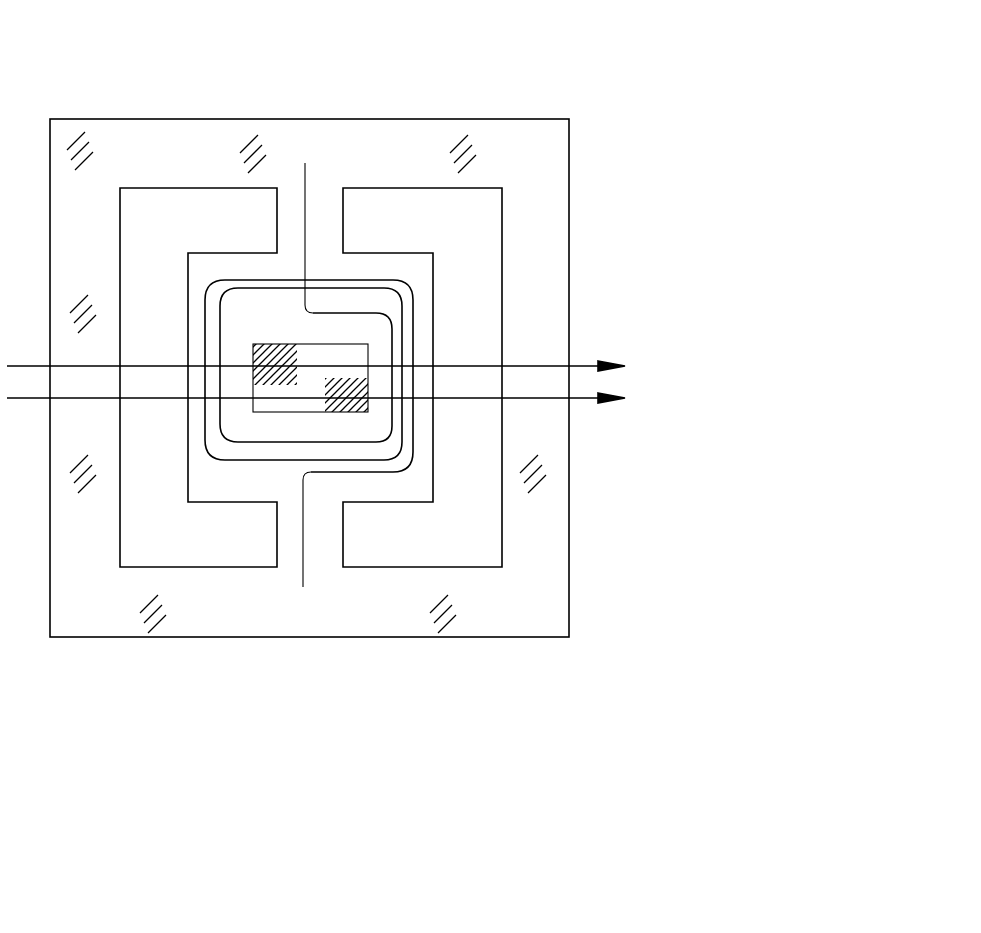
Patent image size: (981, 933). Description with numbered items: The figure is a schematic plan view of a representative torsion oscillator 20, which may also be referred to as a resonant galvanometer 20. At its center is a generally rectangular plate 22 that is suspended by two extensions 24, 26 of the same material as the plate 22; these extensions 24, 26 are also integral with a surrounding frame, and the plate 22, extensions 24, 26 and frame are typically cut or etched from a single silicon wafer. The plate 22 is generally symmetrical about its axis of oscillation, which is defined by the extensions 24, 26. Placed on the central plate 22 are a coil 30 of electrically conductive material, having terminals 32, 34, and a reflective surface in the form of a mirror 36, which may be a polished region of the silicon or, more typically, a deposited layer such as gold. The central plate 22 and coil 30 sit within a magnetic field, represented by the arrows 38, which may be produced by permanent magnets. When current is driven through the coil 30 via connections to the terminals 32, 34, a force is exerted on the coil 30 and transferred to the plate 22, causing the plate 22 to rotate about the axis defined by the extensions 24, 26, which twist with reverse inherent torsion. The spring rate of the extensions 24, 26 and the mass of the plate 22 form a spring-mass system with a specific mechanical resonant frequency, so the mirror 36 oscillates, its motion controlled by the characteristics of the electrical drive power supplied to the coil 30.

The torsion oscillator 20 is at (728, 74).
The central plate 22 is at (410, 482).
The extension 24 is at (325, 210).
The extension 26 is at (325, 550).
The coil 30 is at (410, 302).
The terminal 32 is at (300, 187).
The terminal 34 is at (301, 576).
The mirror 36 is at (297, 412).
The arrows 38 is at (543, 315).